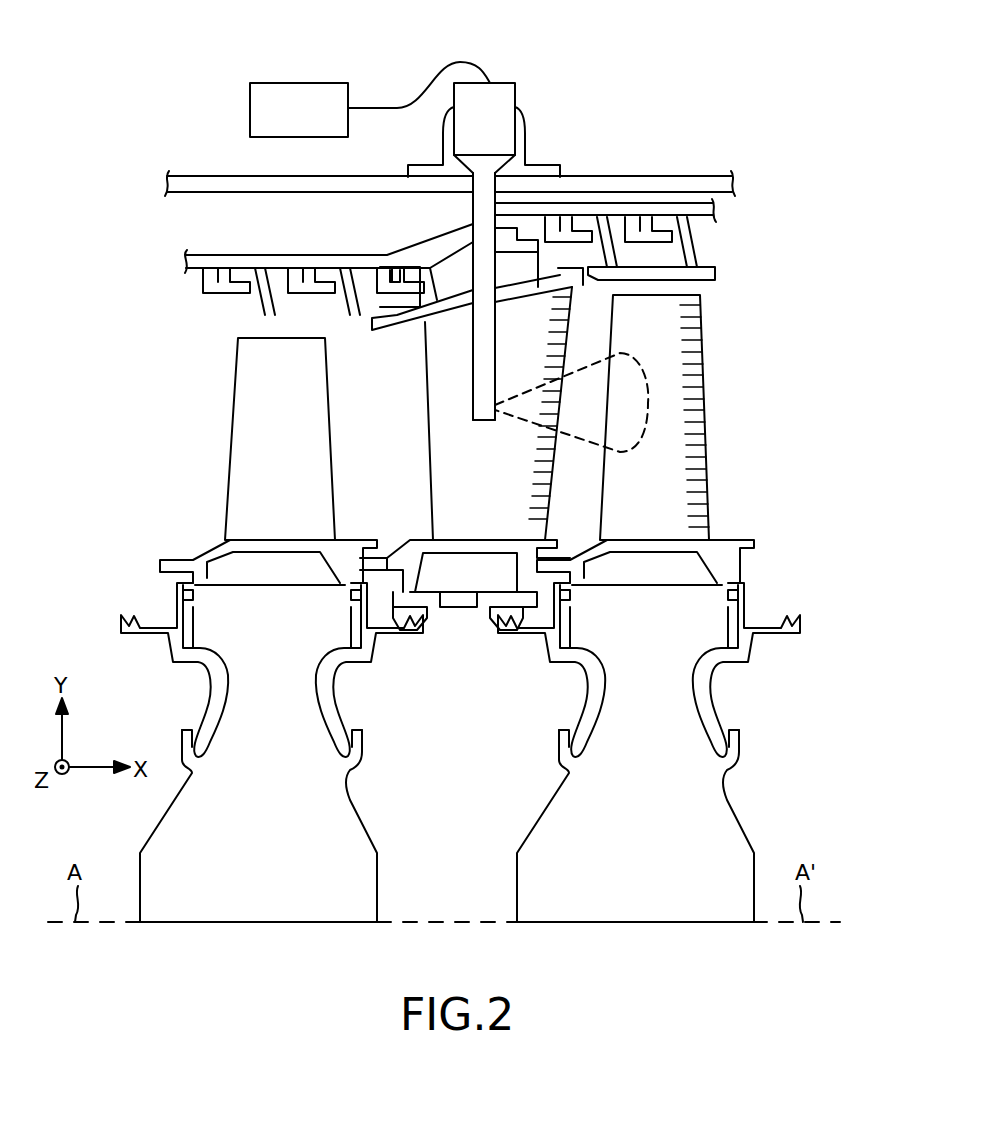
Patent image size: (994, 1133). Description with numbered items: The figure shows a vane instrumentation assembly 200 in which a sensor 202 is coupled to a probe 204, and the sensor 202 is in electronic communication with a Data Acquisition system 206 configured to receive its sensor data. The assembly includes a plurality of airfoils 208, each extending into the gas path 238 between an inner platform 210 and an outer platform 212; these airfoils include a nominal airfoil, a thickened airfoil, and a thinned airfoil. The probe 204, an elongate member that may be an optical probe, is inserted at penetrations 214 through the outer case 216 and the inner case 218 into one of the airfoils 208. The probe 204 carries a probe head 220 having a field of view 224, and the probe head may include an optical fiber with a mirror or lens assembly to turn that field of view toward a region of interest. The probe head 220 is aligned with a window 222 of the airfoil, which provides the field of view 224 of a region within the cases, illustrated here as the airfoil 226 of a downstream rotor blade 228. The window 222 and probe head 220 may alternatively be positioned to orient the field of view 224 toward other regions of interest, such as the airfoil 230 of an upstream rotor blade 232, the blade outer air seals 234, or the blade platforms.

The vane instrumentation assembly 200 is at (693, 64).
The sensor 202 is at (508, 84).
The probe 204 is at (430, 262).
The Data Acquisition (DAQ) system 206 is at (308, 82).
The plurality of airfoils 208 is at (408, 403).
The inner platform 210 is at (417, 540).
The outer platform 212 is at (394, 335).
The penetrations 214 is at (470, 222).
The outer case 216 is at (633, 180).
The inner case 218 is at (712, 212).
The probe head 220 is at (482, 410).
The window 222 is at (496, 417).
The field of view 224 is at (572, 447).
The airfoil of downstream rotor blade 226 is at (703, 331).
The downstream rotor blade 228 is at (752, 407).
The airfoil of upstream rotor blade 230 is at (318, 482).
The upstream rotor blade 232 is at (349, 455).
The blade outer air seals 234 is at (715, 275).
The gas path 238 is at (187, 462).